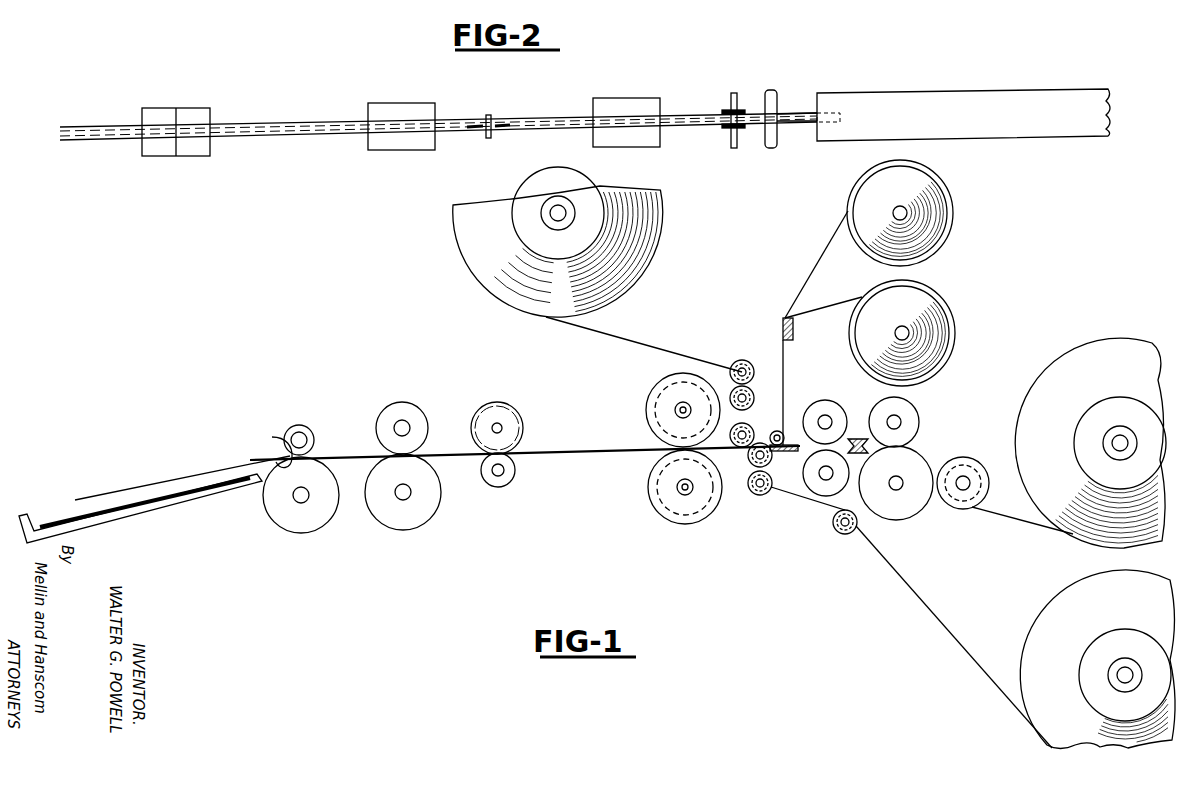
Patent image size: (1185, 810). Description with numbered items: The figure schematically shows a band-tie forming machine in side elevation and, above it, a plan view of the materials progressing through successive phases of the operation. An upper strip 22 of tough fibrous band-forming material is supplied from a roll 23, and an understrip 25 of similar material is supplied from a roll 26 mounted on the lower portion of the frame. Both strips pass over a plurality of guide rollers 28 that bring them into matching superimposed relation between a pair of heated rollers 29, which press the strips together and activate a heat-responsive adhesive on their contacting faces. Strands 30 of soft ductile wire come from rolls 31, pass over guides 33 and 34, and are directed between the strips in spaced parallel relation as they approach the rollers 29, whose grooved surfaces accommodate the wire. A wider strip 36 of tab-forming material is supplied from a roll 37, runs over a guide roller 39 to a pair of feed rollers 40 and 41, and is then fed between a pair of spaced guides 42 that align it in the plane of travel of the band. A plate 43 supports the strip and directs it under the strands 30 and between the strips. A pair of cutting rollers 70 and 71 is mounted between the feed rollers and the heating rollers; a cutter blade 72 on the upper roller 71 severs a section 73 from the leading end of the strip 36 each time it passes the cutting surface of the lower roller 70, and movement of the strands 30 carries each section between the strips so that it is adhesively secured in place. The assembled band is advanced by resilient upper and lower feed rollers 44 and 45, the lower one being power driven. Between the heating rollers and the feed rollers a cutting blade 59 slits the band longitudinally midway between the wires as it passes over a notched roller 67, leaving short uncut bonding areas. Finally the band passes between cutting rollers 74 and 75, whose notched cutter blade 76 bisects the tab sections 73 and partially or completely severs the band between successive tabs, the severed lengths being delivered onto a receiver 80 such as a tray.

In FIG. 2, the upper strip 22 is at (553, 118).
In FIG. 1, the upper strip 22 is at (678, 350).
In FIG. 1, the roll 23 is at (658, 231).
In FIG. 2, the understrip 25 is at (800, 124).
In FIG. 1, the understrip 25 is at (944, 629).
In FIG. 1, the roll 26 is at (1030, 628).
In FIG. 2, the guide rollers 28 is at (731, 110).
In FIG. 1, the guide rollers 28 is at (745, 360).
In FIG. 1, the rollers 29 is at (648, 416).
In FIG. 2, the strands 30 is at (270, 125).
In FIG. 1, the strands 30 is at (808, 286).
In FIG. 1, the rolls 31 is at (944, 229).
In FIG. 1, the guide 33 is at (794, 331).
In FIG. 2, the guide 34 is at (778, 100).
In FIG. 1, the guide 34 is at (780, 430).
In FIG. 2, the strip 36 is at (874, 94).
In FIG. 1, the strip 36 is at (1010, 516).
In FIG. 1, the roll 37 is at (1104, 341).
In FIG. 1, the guide roller 39 is at (966, 469).
In FIG. 1, the feed roller 40 is at (910, 416).
In FIG. 1, the feed roller 41 is at (908, 511).
In FIG. 1, the guides 42 is at (858, 438).
In FIG. 1, the plate 43 is at (790, 452).
In FIG. 1, the upper feed roller 44 is at (415, 412).
In FIG. 1, the lower feed roller 45 is at (390, 525).
In FIG. 2, the cutting blade 59 is at (498, 124).
In FIG. 1, the cutting blade 59 is at (510, 408).
In FIG. 1, the roller 67 is at (510, 478).
In FIG. 1, the lower cutting roller 70 is at (808, 481).
In FIG. 1, the upper cutting roller 71 is at (821, 402).
In FIG. 1, the cutter blade 72 is at (838, 406).
In FIG. 2, the section 73 is at (178, 108).
In FIG. 1, the upper cutting roller 74 is at (310, 426).
In FIG. 1, the lower cutting roller 75 is at (288, 524).
In FIG. 1, the cutter blade 76 is at (270, 447).
In FIG. 1, the receiver 80 is at (162, 512).